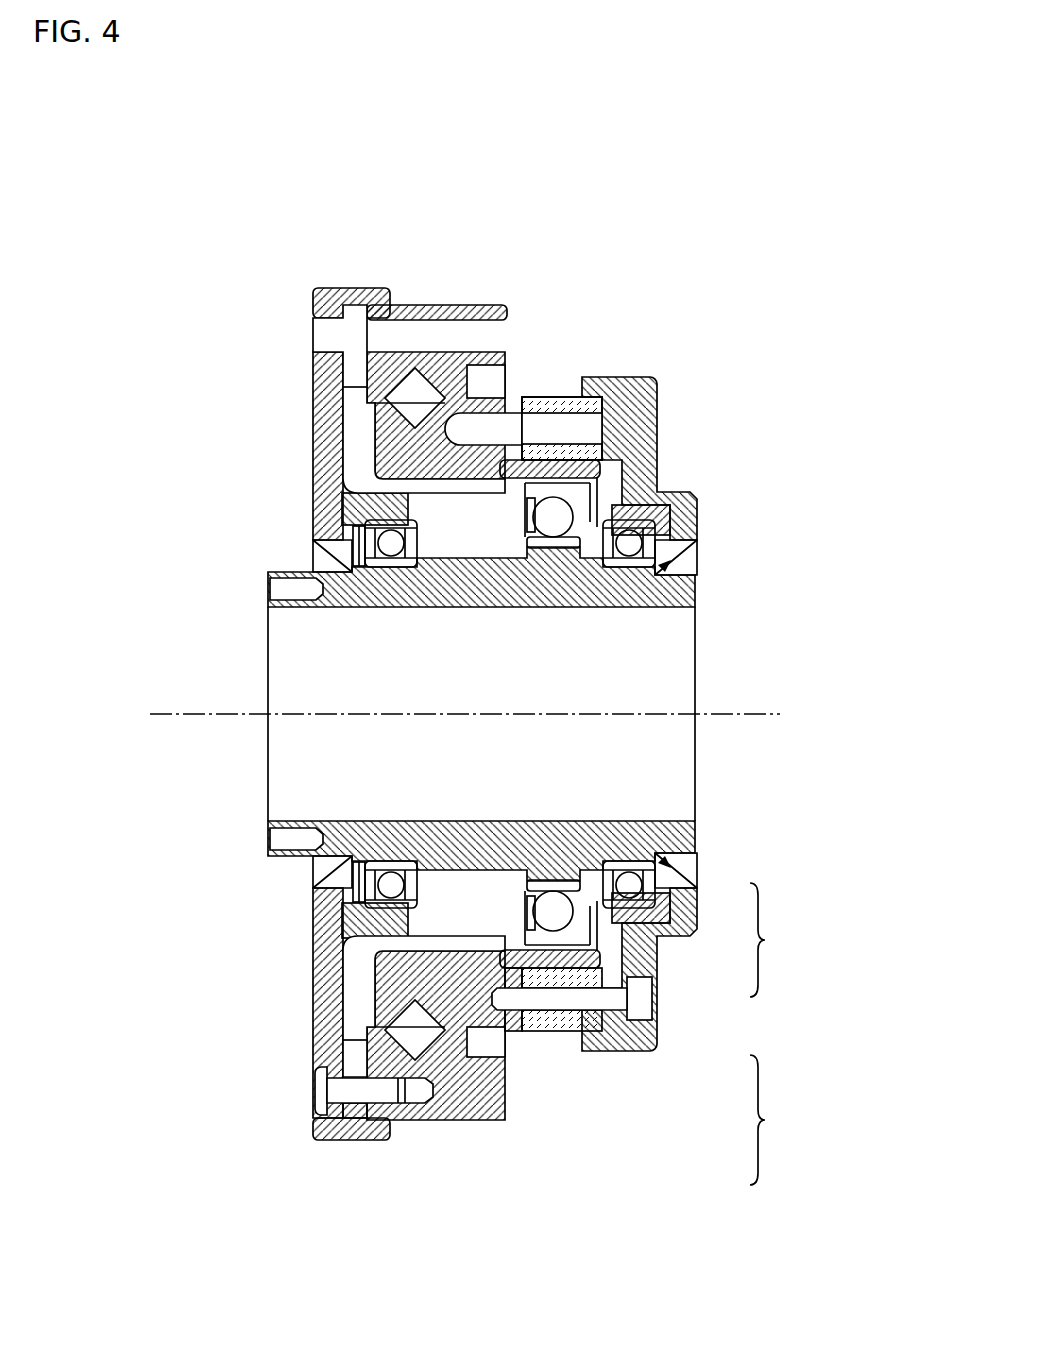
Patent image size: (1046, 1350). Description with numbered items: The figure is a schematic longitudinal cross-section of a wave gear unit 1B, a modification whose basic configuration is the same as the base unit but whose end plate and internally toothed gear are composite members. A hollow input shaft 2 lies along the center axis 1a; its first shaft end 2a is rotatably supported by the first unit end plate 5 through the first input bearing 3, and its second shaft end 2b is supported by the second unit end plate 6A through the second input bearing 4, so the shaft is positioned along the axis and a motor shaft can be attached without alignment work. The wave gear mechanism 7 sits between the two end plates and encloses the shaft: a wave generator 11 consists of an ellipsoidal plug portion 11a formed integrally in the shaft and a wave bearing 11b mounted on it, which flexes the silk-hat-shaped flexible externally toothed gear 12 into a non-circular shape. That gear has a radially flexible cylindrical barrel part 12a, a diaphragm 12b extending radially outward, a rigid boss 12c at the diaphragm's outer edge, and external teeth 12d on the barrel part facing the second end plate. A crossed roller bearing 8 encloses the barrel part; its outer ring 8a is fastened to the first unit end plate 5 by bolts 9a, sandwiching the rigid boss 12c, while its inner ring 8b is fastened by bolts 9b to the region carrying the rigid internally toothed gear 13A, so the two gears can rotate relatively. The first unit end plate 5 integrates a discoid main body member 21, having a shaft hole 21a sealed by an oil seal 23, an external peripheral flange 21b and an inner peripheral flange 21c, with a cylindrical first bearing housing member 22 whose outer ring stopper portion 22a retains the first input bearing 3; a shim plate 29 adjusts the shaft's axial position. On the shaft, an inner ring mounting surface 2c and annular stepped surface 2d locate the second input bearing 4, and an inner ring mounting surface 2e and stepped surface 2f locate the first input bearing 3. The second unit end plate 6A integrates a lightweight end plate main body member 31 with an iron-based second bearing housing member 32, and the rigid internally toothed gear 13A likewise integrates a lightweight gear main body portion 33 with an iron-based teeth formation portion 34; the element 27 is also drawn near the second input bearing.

The wave gear unit 1B is at (643, 216).
The center axis 1a is at (178, 716).
The input shaft 2 is at (257, 688).
The first shaft end 2a is at (372, 575).
The second shaft end 2b is at (640, 595).
The inner ring mounting surface 2c is at (648, 862).
The annular stepped surface 2d is at (622, 862).
The inner ring mounting surface 2e is at (345, 862).
The annular stepped surface 2f is at (445, 940).
The first input bearing 3 is at (370, 612).
The second input bearing 4 is at (652, 582).
The first unit end plate 5 is at (307, 402).
The second unit end plate 6A is at (774, 940).
The wave gear mechanism 7 is at (483, 472).
The crossed roller bearing 8 is at (470, 398).
The outer ring 8a is at (437, 305).
The inner ring 8b is at (440, 455).
The bolts 9a is at (350, 1092).
The bolts 9b is at (566, 1000).
The wave generator 11 is at (590, 897).
The plug portion 11a is at (573, 862).
The wave bearing 11b is at (520, 910).
The flexible externally toothed gear 12 is at (482, 966).
The cylindrical barrel part 12a is at (440, 955).
The diaphragm 12b is at (355, 980).
The rigid boss 12c is at (355, 1057).
The external teeth 12d is at (556, 944).
The rigid internally toothed gear 13A is at (779, 1120).
The first unit end plate main body member 21 is at (307, 378).
The shaft hole 21a is at (340, 562).
The external peripheral flange 21b is at (357, 290).
The inner peripheral flange 21c is at (330, 460).
The first bearing housing member 22 is at (340, 493).
The outer ring stopper portion 22a is at (350, 520).
The oil seal 23 is at (345, 557).
The tapered ring 27 is at (683, 563).
The shim plate 29 is at (343, 895).
The end plate main body member 31 is at (596, 960).
The second bearing housing member 32 is at (658, 900).
The gear main body portion 33 is at (598, 1032).
The teeth formation portion 34 is at (621, 975).